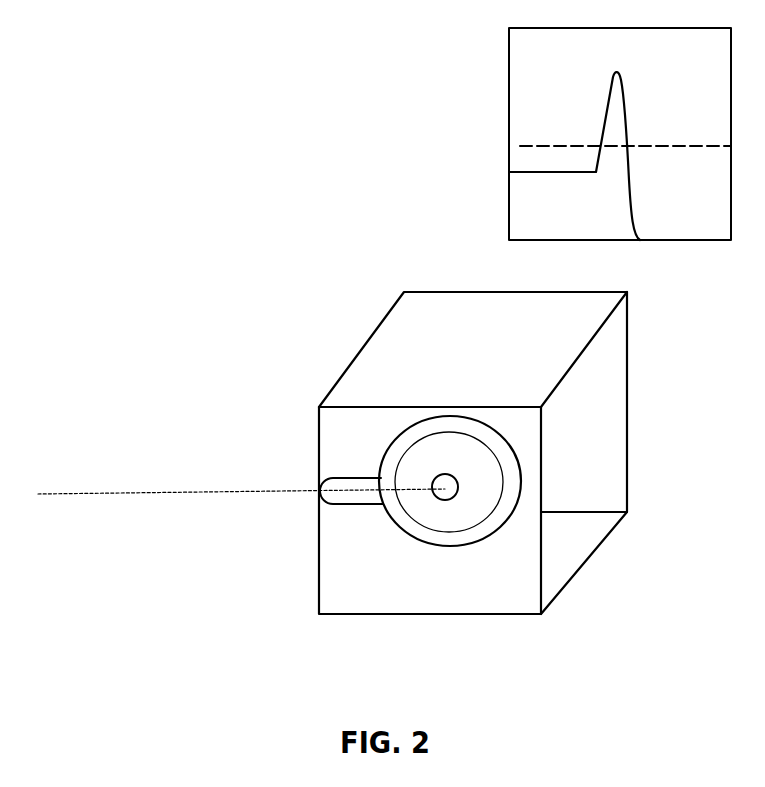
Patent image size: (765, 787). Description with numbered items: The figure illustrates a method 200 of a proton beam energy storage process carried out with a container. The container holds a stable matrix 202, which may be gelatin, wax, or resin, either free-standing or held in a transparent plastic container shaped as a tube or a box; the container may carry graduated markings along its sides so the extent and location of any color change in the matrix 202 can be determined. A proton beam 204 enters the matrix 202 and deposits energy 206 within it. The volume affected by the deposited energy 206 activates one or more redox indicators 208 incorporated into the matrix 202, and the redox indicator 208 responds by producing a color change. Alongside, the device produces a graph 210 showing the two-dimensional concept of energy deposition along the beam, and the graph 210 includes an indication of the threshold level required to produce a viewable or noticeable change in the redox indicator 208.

The method of a proton beam energy storage process 200 is at (218, 117).
The stable matrix 202 is at (488, 597).
The proton beam 204 is at (343, 505).
The energy 206 is at (445, 474).
The redox indicator 208 is at (407, 533).
The graph 210 is at (613, 230).